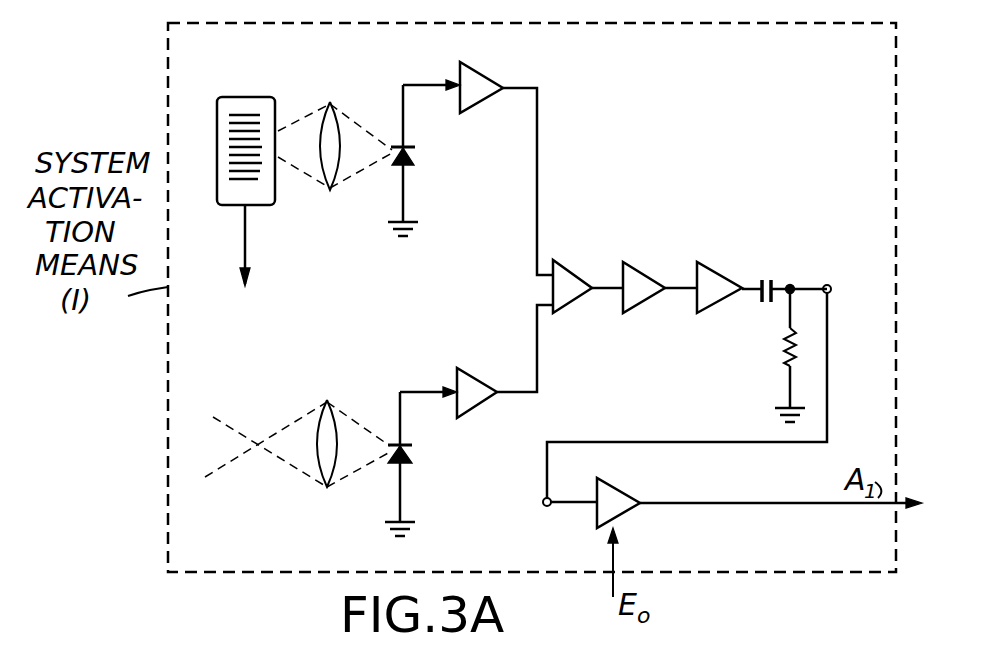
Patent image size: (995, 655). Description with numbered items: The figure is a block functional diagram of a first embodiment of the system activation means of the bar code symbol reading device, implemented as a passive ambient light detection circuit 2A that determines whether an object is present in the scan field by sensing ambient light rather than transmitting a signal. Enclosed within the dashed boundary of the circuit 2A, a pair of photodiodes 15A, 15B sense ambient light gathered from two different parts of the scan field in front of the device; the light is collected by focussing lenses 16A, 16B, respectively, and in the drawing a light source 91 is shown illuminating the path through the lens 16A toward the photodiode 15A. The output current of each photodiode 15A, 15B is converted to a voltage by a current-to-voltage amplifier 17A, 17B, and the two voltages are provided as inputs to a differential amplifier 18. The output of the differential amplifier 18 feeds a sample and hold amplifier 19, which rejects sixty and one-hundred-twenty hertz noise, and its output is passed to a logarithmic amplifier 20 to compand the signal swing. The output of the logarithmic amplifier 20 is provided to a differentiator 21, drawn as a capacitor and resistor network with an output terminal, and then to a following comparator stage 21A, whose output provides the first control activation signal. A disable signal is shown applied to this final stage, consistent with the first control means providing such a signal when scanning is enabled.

The passive ambient light detection circuit 2A is at (165, 545).
The light source 91 is at (258, 97).
The focussing lens 16A is at (337, 112).
The focussing lens 16B is at (333, 413).
The photodiode 15A is at (418, 153).
The photodiode 15B is at (414, 452).
The current-to-voltage amplifier 17A is at (486, 75).
The current-to-voltage amplifier 17B is at (490, 354).
The differential amplifier 18 is at (573, 268).
The sample and hold amplifier 19 is at (640, 270).
The logarithmic amplifier 20 is at (717, 270).
The differentiator 21 is at (812, 270).
The output amplifier 21A is at (627, 512).